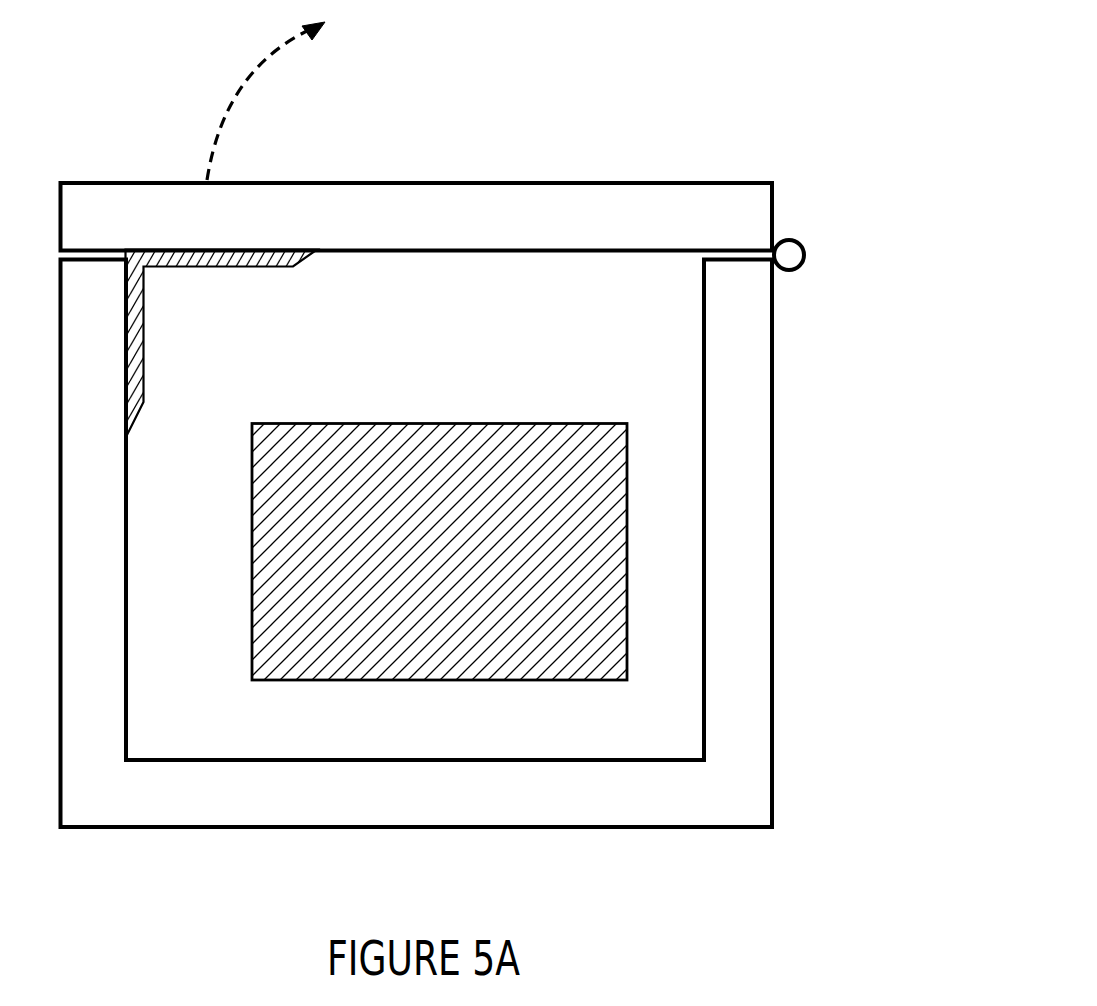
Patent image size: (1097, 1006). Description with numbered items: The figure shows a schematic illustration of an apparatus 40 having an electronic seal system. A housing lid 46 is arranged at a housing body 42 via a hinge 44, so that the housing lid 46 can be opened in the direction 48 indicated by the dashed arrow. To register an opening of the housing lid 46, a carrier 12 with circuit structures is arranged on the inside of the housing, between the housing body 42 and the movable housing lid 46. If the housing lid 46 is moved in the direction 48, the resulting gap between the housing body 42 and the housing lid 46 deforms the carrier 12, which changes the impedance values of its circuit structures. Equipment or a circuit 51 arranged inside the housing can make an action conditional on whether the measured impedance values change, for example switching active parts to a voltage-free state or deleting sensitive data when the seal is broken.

The apparatus 40 is at (751, 41).
The housing body 42 is at (416, 810).
The hinge 44 is at (803, 263).
The housing lid 46 is at (412, 200).
The direction 48 is at (262, 72).
The carrier 12 is at (223, 268).
The circuit 51 is at (437, 423).